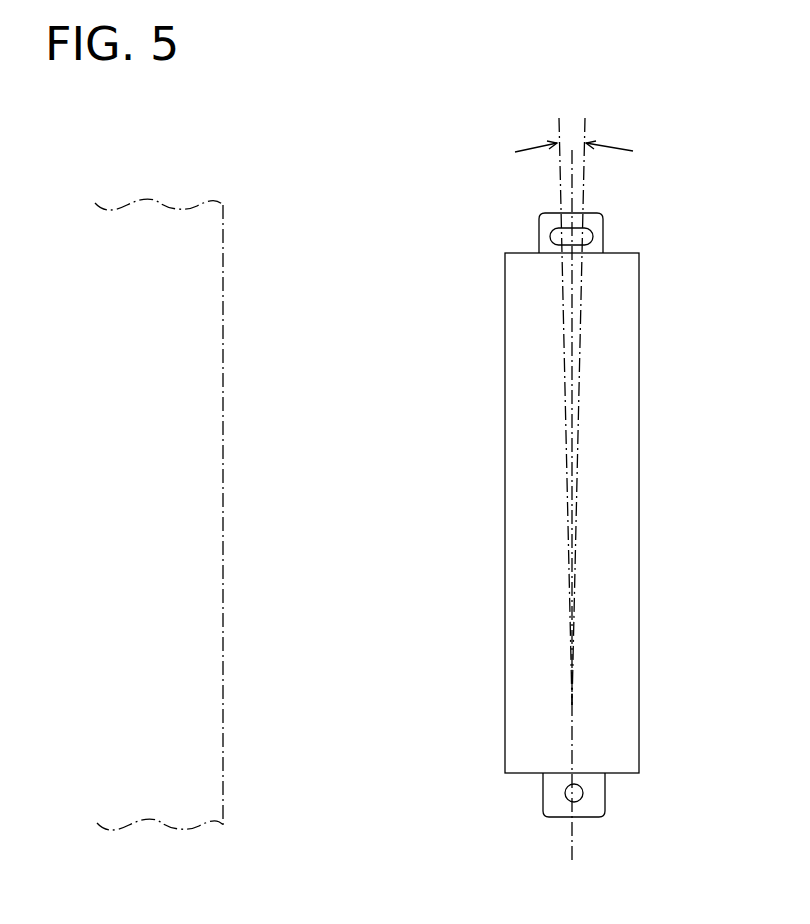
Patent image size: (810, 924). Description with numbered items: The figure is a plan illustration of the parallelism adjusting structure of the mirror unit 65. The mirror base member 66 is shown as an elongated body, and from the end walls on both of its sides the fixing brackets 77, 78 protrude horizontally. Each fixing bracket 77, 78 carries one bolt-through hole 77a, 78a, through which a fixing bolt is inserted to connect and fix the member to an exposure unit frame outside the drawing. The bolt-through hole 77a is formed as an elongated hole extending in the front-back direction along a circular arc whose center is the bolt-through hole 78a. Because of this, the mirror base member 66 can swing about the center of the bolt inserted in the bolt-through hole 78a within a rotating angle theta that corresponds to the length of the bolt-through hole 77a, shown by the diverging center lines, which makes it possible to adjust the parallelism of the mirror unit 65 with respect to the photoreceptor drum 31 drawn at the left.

The photoreceptor drum 31 is at (224, 532).
The mirror unit 65 is at (611, 489).
The mirror base member 66 is at (644, 310).
The fixing bracket 77 is at (575, 233).
The bolt-through hole 77a is at (556, 236).
The fixing bracket 78 is at (579, 795).
The bolt-through hole 78a is at (565, 795).